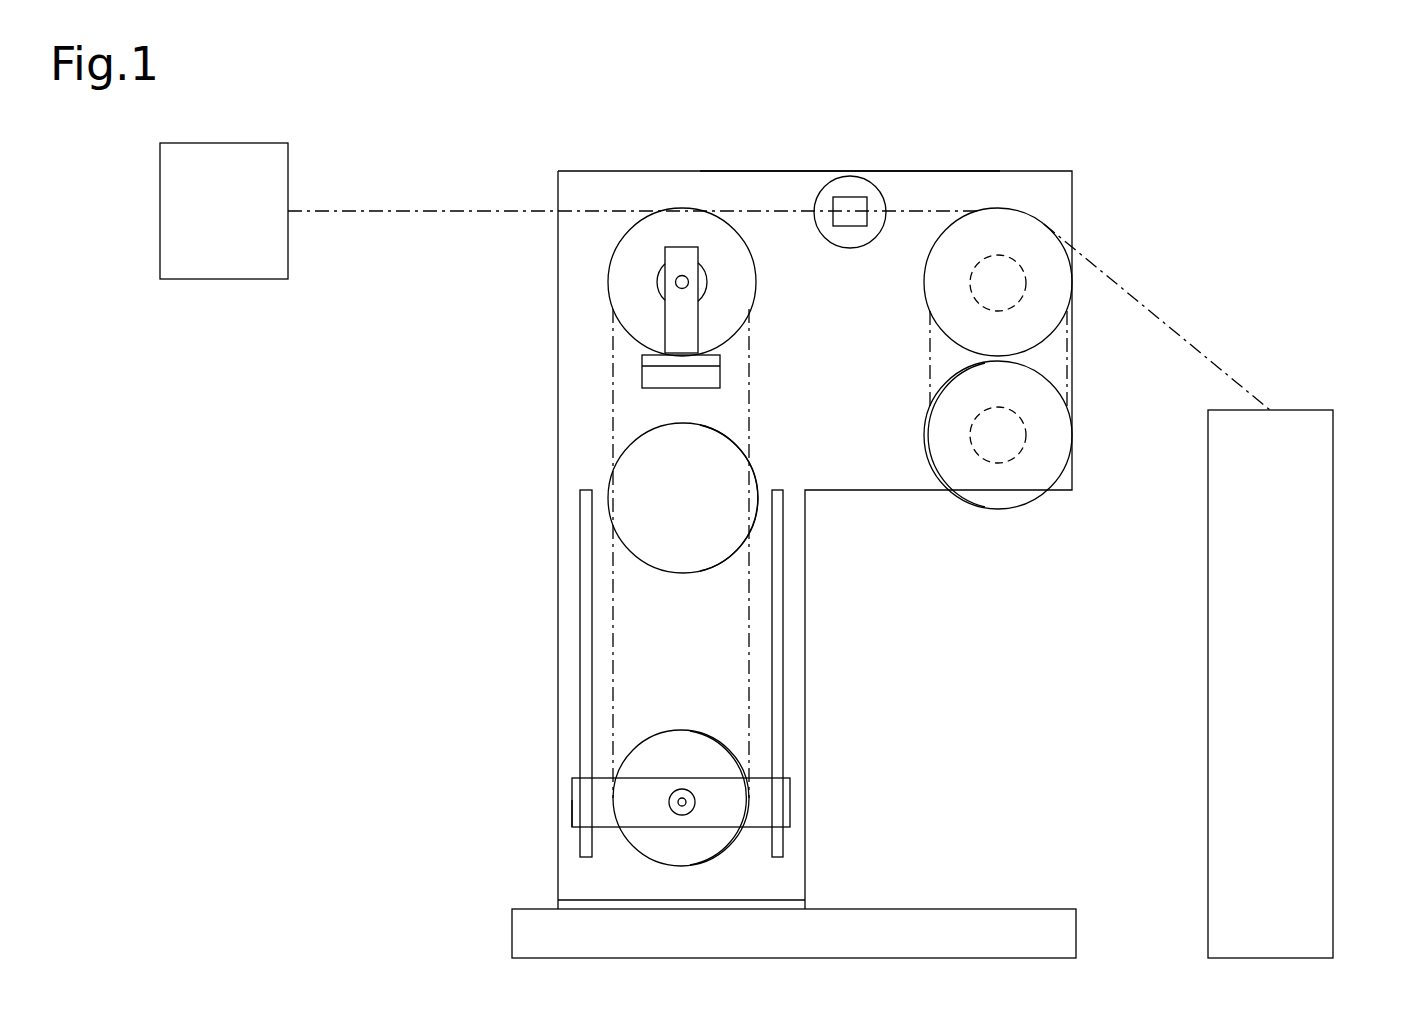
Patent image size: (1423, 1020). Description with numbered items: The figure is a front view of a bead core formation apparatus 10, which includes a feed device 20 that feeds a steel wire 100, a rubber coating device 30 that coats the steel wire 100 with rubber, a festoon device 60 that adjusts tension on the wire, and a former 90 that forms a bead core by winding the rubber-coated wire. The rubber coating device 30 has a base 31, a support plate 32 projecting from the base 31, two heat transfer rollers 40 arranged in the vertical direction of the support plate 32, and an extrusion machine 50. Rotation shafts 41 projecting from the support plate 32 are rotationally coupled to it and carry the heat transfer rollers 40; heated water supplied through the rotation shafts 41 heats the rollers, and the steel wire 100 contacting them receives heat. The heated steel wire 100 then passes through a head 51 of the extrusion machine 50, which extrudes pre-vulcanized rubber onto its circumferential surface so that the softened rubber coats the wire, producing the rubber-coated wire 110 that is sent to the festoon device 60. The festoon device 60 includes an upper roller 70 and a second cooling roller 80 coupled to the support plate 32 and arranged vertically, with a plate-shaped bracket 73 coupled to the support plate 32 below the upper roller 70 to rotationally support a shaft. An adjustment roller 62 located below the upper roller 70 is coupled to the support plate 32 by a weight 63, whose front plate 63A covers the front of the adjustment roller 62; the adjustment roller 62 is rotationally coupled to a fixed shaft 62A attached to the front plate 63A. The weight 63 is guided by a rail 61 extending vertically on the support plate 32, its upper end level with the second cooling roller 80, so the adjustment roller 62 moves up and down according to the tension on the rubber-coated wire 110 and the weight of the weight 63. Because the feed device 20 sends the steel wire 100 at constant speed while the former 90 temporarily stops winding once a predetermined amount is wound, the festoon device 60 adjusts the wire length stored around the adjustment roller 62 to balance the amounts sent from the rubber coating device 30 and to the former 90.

The bead core formation apparatus 10 is at (1230, 139).
The feed device 20 is at (1335, 447).
The rubber coating device 30 is at (1017, 143).
The base 31 is at (1040, 909).
The support plate 32 is at (950, 171).
The heat transfer rollers 40 is at (1059, 240).
The rotation shafts 41 is at (1026, 280).
The extrusion machine 50 is at (835, 178).
The head 51 is at (860, 197).
The festoon device 60 is at (683, 133).
The rail 61 is at (580, 628).
The adjustment roller 62 is at (642, 738).
The fixed shaft 62A is at (686, 789).
The weight 63 is at (572, 795).
The front plate 63A is at (600, 817).
The upper roller 70 is at (755, 294).
The bracket 73 is at (703, 388).
The second cooling roller 80 is at (753, 472).
The former 90 is at (248, 143).
The steel wire 100 is at (1178, 335).
The rubber-coated wire 110 is at (765, 210).